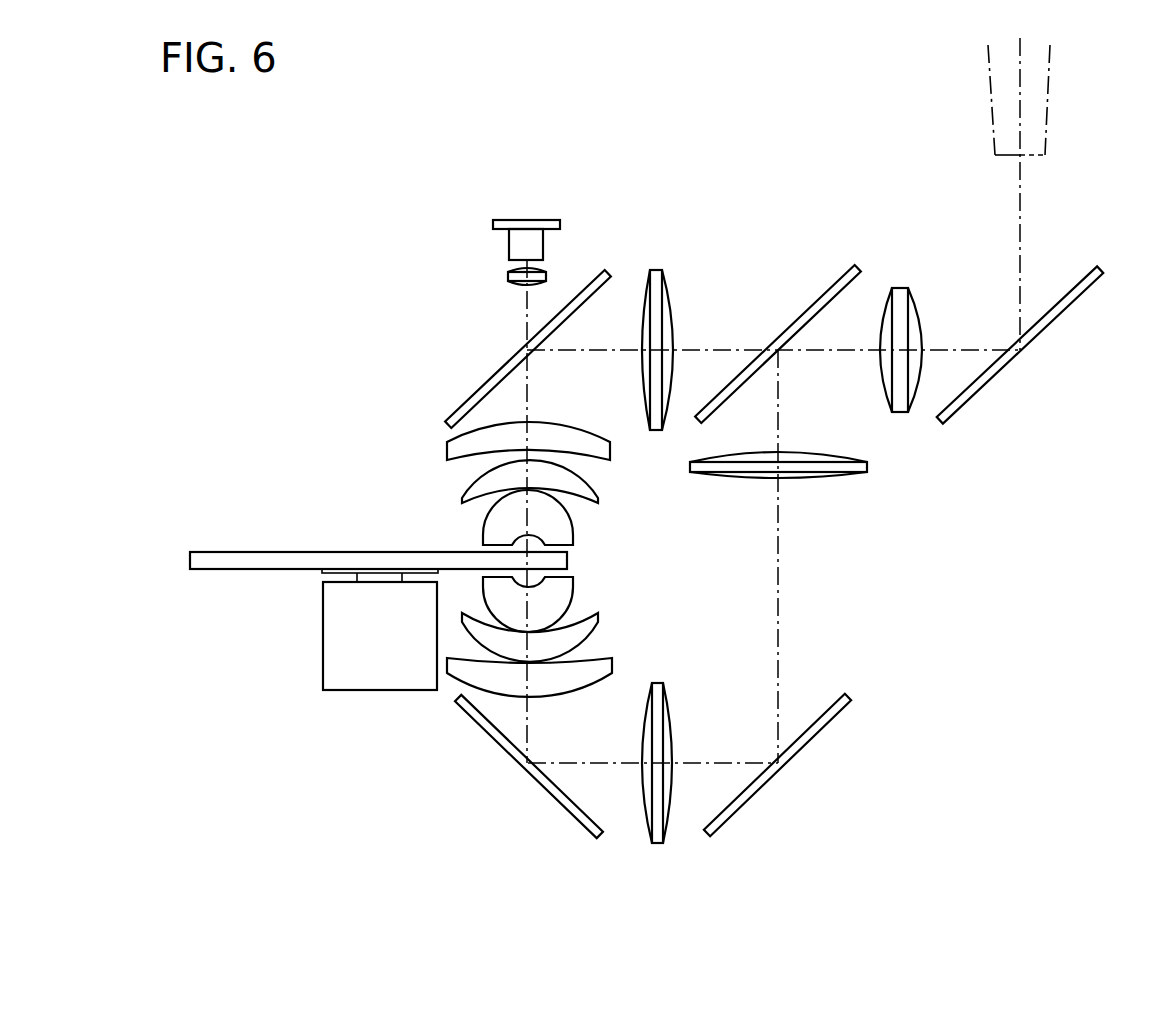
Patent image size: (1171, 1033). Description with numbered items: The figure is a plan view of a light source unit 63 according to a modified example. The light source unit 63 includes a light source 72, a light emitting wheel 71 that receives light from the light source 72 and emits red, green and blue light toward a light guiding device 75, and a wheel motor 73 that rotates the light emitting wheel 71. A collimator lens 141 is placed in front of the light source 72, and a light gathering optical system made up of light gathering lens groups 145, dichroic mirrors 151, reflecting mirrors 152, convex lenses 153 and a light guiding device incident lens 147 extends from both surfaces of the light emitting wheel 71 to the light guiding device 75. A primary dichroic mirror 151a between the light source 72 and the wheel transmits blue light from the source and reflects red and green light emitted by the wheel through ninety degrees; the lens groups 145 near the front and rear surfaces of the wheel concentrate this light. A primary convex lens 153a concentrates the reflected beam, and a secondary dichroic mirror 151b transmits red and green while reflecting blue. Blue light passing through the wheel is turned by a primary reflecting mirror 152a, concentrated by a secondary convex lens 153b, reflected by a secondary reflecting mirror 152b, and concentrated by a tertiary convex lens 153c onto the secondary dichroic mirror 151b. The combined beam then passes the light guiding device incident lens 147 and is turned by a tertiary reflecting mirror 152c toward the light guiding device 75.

The light source unit 63 is at (283, 262).
The light emitting wheel 71 is at (260, 570).
The light source 72 is at (510, 221).
The wheel motor 73 is at (363, 665).
The light guiding device 75 is at (1037, 105).
The collimator lens 141 is at (508, 277).
The light gathering lens groups 145 is at (610, 622).
The light guiding device incident lens 147 is at (900, 293).
The dichroic mirrors 151 is at (616, 311).
The primary dichroic mirror 151a is at (480, 393).
The secondary dichroic mirror 151b is at (835, 290).
The reflecting mirrors 152 is at (793, 552).
The primary reflecting mirror 152a is at (480, 718).
The secondary reflecting mirror 152b is at (832, 713).
The tertiary reflecting mirror 152c is at (1072, 300).
The convex lenses 153 is at (772, 501).
The primary convex lens 153a is at (657, 273).
The secondary convex lens 153b is at (657, 692).
The tertiary convex lens 153c is at (817, 475).